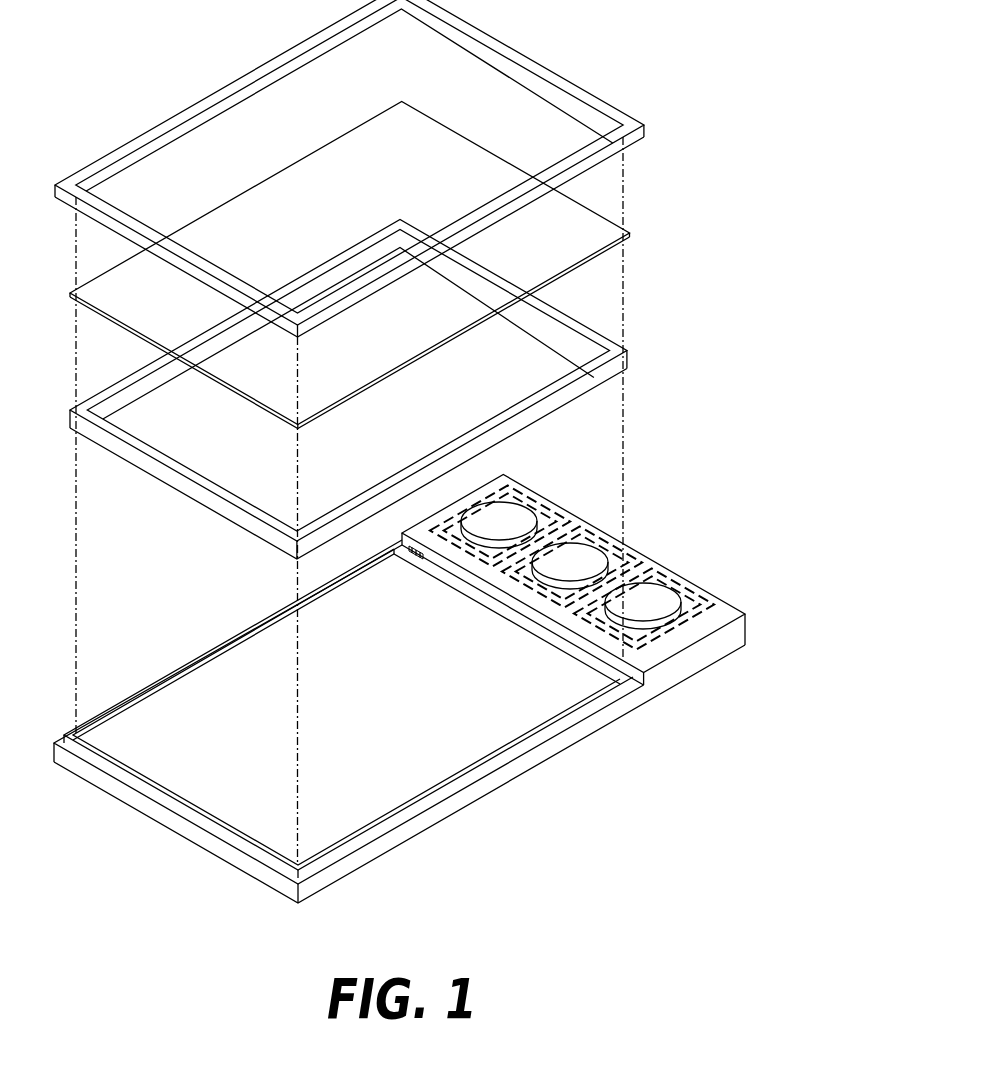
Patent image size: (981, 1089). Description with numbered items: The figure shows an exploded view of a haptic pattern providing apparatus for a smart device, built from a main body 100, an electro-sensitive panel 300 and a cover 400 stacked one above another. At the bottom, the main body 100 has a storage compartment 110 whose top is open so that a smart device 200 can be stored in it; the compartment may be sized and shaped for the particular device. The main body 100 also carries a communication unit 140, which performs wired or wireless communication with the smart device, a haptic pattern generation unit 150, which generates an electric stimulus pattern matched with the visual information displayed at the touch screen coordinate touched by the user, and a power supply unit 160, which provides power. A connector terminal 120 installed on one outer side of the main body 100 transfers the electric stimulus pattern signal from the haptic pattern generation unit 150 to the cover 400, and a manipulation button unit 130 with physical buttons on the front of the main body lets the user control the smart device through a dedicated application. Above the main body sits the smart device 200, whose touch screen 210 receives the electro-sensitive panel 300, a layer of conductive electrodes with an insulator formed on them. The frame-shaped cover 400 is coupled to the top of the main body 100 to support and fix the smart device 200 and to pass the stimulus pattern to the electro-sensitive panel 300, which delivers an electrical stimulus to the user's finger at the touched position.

The main body 100 is at (697, 592).
The storage compartment 110 is at (411, 716).
The connector terminal 120 is at (402, 543).
The manipulation button unit 130 is at (520, 515).
The communication unit 140 is at (500, 502).
The haptic pattern generation unit 150 is at (594, 553).
The power supply unit 160 is at (682, 600).
The smart device 200 is at (593, 330).
The touch screen 210 is at (553, 357).
The electro-sensitive panel 300 is at (594, 204).
The cover 400 is at (554, 82).